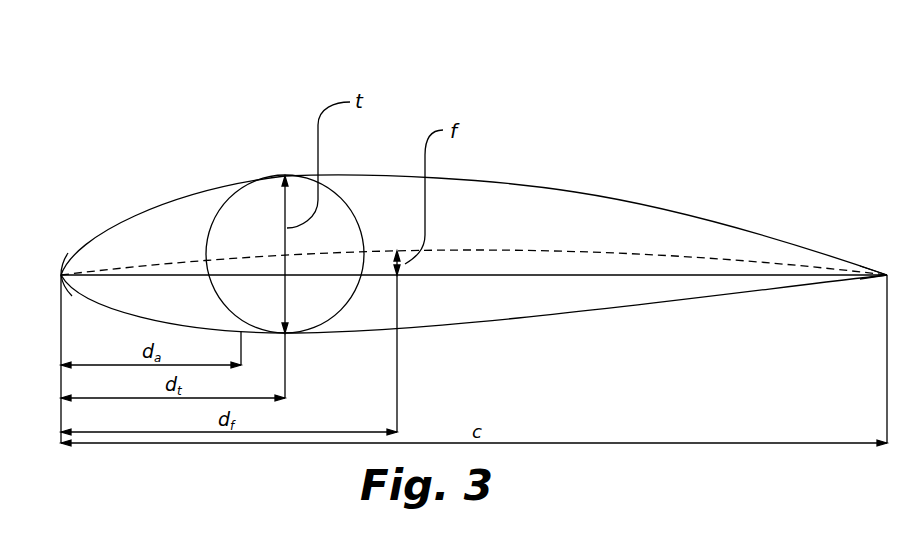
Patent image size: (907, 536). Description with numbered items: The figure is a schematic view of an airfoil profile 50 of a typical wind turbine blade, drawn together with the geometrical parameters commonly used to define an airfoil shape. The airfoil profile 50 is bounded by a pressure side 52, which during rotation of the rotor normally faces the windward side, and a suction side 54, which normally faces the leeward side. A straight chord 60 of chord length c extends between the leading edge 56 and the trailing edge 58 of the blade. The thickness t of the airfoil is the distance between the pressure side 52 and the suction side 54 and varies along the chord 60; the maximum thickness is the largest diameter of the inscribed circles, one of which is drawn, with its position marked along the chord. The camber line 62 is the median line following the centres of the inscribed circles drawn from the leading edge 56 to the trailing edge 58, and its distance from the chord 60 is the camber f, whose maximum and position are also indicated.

The airfoil profile 50 is at (474, 199).
The pressure side 52 is at (635, 303).
The suction side 54 is at (576, 192).
The leading edge 56 is at (61, 275).
The trailing edge 58 is at (887, 275).
The chord 60 is at (677, 273).
The camber line 62 is at (463, 250).